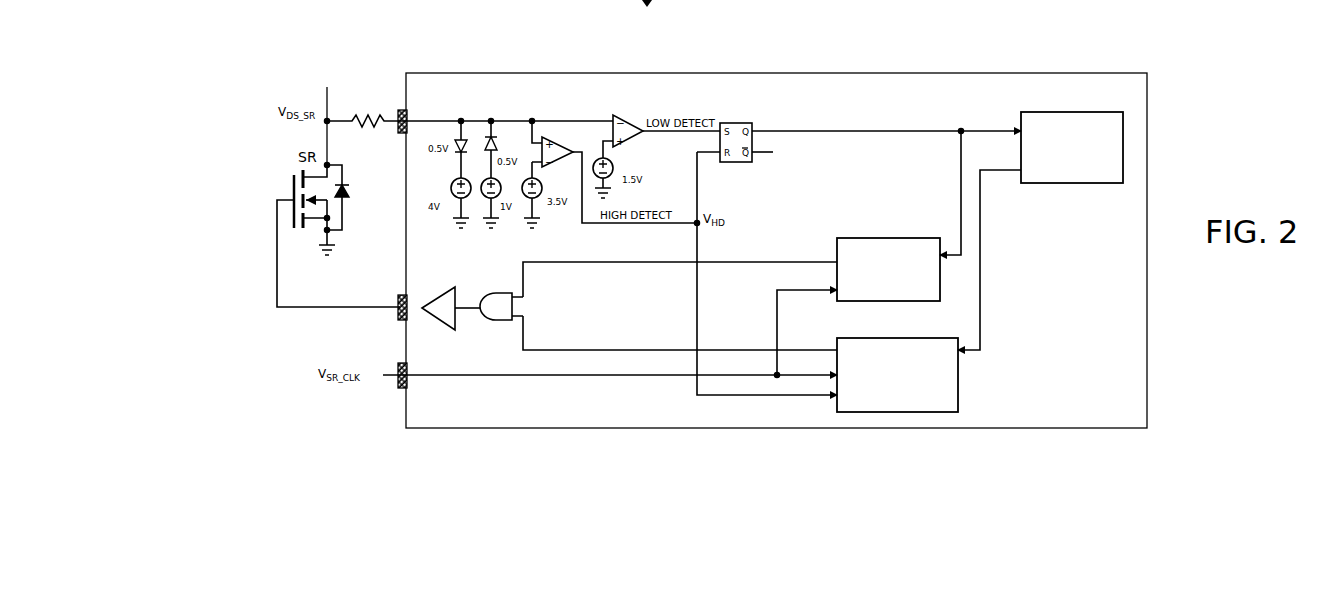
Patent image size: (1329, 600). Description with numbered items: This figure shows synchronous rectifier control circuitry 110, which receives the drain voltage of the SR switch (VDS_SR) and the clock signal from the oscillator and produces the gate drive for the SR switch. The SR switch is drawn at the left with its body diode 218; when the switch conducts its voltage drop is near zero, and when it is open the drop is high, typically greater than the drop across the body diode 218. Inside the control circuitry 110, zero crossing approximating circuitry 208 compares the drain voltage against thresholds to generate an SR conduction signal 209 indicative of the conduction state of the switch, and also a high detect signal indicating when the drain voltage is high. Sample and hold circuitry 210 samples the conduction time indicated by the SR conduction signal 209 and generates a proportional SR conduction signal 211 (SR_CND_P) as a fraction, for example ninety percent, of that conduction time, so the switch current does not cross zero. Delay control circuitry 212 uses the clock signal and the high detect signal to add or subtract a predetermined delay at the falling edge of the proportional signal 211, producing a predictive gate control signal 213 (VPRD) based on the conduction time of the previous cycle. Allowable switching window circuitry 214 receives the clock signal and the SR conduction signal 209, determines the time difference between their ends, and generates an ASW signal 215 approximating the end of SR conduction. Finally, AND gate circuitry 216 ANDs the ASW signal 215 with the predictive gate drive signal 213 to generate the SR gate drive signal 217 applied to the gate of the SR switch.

The synchronous rectifier control circuitry 110 is at (1086, 30).
The zero crossing approximating circuitry 208 is at (540, 102).
The SR conduction signal 209 is at (857, 132).
The sample and hold circuitry 210 is at (1107, 183).
The proportional SR conduction signal 211 is at (986, 298).
The delay control circuitry 212 is at (958, 393).
The predictive gate control signal 213 is at (772, 350).
The allowable switching window circuitry 214 is at (837, 238).
The ASW signal 215 is at (642, 262).
The AND gate circuitry 216 is at (508, 313).
The SR gate drive signal 217 is at (279, 302).
The body diode 218 is at (333, 128).